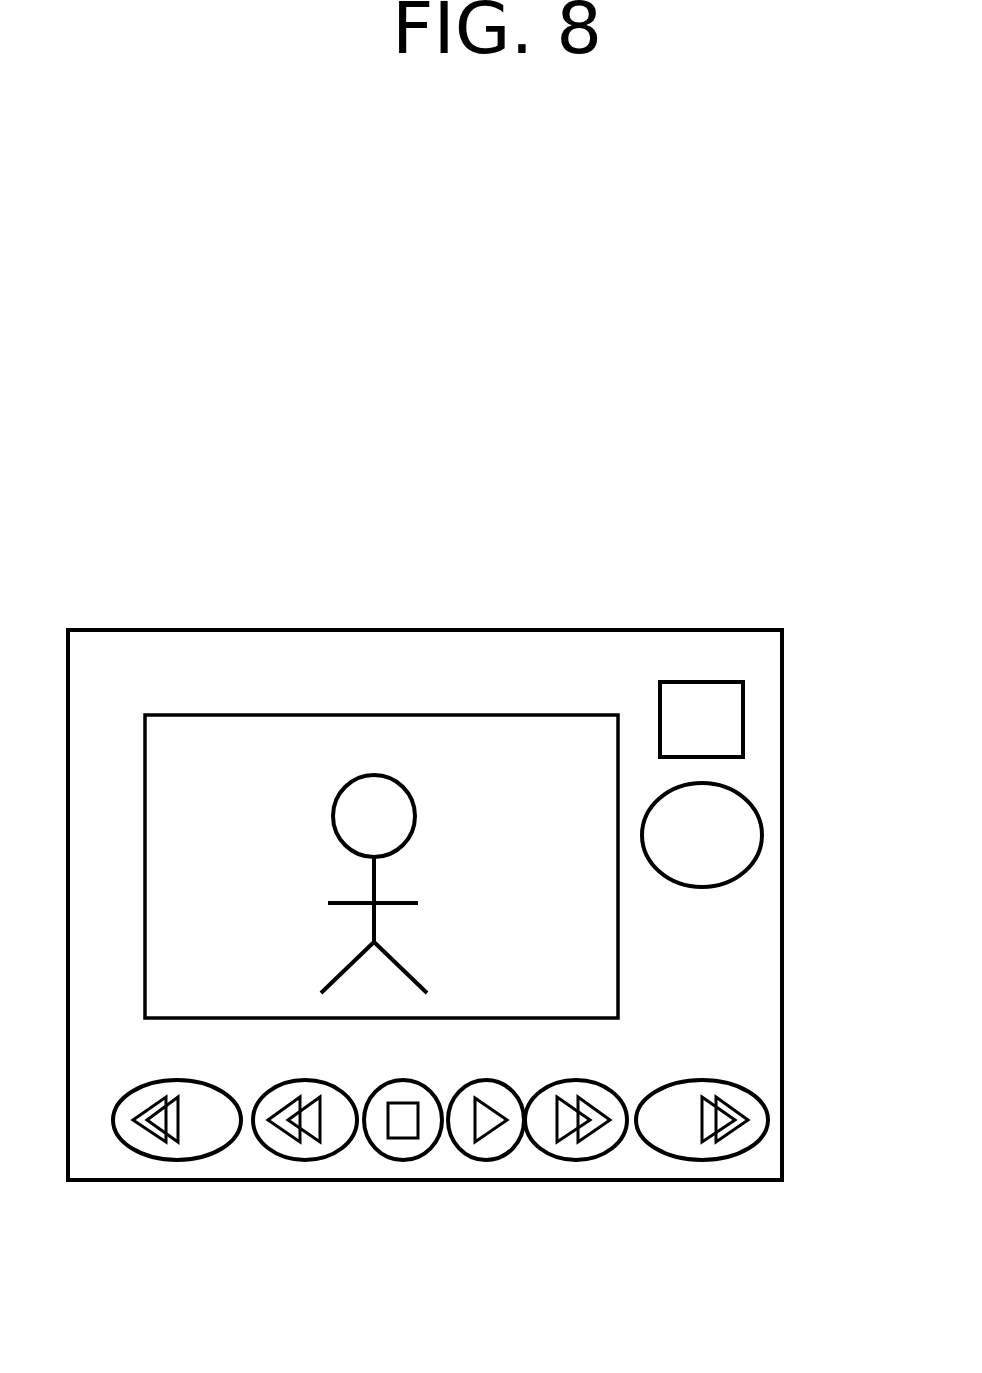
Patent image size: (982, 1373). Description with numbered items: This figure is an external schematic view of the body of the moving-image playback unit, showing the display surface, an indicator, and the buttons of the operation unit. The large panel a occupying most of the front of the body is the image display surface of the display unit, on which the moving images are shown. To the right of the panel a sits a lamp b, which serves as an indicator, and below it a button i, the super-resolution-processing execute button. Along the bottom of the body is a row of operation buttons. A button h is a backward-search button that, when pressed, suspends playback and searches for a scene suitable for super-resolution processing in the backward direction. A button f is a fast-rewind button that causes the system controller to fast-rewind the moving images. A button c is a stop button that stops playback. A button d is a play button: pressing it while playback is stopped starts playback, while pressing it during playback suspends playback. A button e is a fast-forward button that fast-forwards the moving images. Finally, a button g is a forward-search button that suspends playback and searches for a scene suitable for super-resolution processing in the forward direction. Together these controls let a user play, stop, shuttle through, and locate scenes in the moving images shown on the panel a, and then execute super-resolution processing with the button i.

The panel a is at (377, 715).
The lamp b is at (743, 718).
The super-resolution-processing execute button i is at (762, 830).
The backward-search button h is at (175, 1160).
The fast-rewind button f is at (303, 1160).
The stop button c is at (401, 1160).
The play button d is at (484, 1160).
The fast-forward button e is at (574, 1160).
The forward-search button g is at (700, 1160).